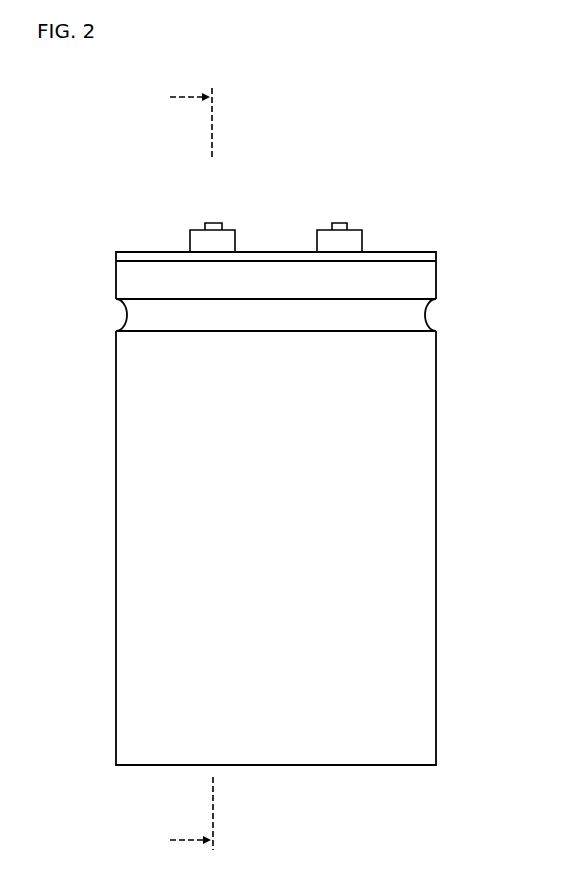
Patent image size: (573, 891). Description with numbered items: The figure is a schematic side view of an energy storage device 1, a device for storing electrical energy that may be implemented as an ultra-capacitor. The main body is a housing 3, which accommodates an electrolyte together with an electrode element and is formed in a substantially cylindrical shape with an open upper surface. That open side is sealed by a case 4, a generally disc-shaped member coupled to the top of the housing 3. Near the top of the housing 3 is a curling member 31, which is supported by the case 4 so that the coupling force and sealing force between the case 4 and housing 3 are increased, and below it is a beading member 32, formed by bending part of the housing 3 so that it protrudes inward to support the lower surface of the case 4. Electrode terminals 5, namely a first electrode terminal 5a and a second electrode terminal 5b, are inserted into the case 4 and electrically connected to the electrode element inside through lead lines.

The energy storage device 1 is at (85, 100).
The housing 3 is at (274, 532).
The curling member 31 is at (133, 252).
The beading member 32 is at (125, 316).
The case 4 is at (307, 250).
The electrode terminals 5 is at (276, 190).
The first electrode terminal 5a is at (213, 223).
The second electrode terminal 5b is at (339, 211).